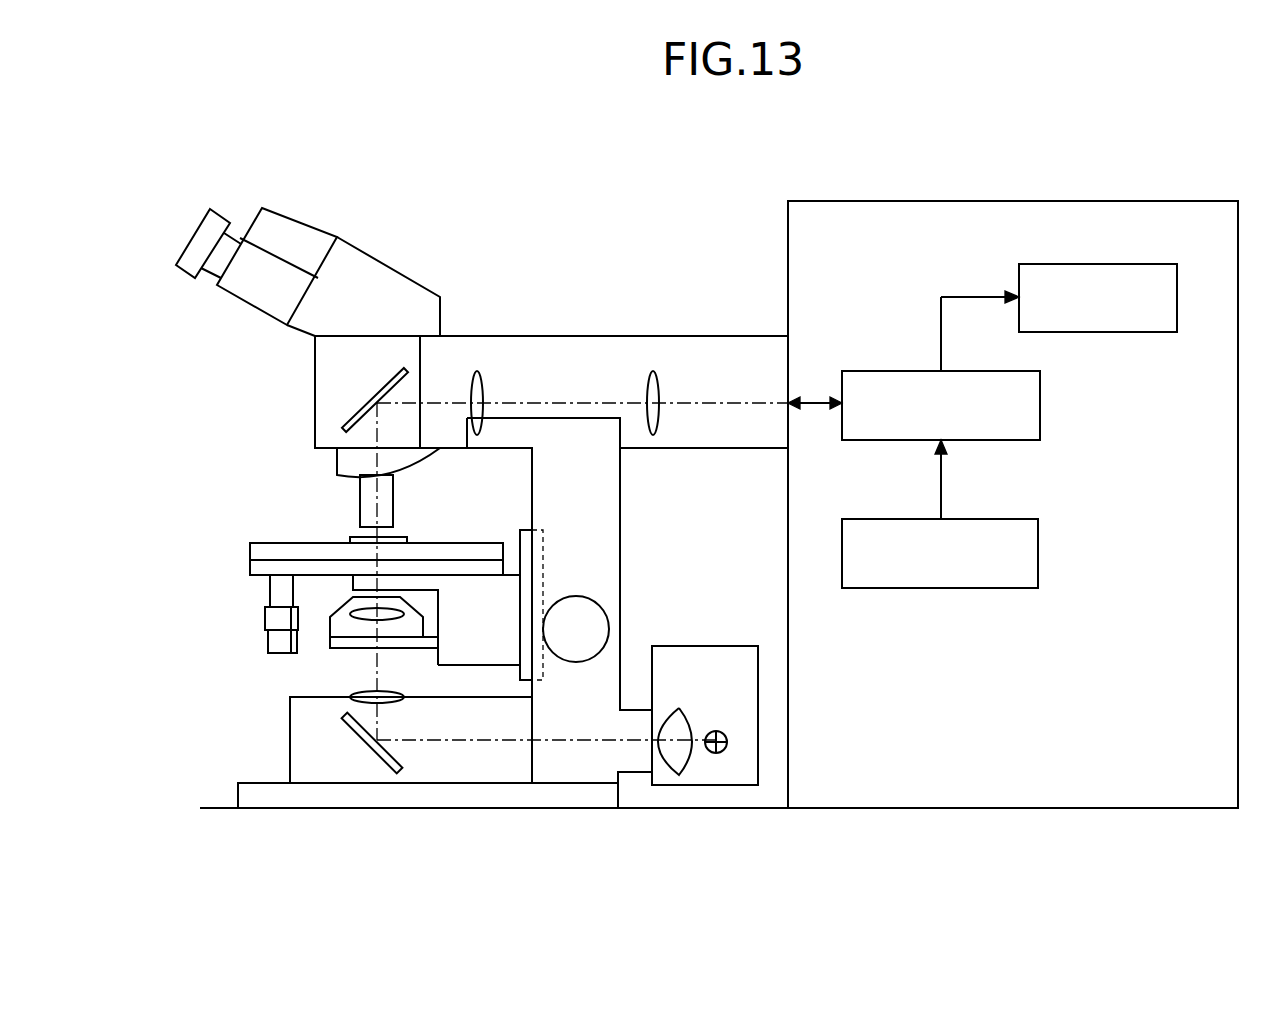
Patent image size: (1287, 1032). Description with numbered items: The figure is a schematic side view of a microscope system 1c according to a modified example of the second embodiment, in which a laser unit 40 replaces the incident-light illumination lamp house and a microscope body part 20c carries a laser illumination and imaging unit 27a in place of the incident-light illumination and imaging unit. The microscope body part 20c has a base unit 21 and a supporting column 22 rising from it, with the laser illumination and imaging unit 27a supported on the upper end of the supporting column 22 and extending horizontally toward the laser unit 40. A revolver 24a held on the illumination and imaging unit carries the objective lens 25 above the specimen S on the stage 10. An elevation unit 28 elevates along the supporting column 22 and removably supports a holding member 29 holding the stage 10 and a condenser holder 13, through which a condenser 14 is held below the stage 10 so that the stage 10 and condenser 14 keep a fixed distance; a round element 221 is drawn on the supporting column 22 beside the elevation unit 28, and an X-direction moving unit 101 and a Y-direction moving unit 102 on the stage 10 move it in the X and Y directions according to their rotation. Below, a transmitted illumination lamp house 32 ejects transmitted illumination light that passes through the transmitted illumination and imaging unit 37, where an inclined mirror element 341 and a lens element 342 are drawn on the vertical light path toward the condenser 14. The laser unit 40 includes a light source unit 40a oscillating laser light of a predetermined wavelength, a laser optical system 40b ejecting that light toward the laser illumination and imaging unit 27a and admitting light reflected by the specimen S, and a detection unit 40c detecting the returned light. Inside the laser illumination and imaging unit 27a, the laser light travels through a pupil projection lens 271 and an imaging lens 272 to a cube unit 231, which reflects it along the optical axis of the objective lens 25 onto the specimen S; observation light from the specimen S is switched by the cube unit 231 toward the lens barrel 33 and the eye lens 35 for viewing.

The microscope system 1c is at (475, 205).
The eye lens 35 is at (197, 245).
The lens barrel 33 is at (375, 282).
The cube unit 231 is at (327, 410).
The laser illumination and imaging unit 27a is at (593, 355).
The imaging lens 272 is at (477, 370).
The pupil projection lens 271 is at (655, 370).
The revolver 24a is at (348, 463).
The objective lens 25 is at (367, 502).
The specimen S is at (407, 538).
The stage 10 is at (257, 550).
The condenser 14 is at (360, 612).
The X-direction moving unit 101 is at (270, 618).
The Y-direction moving unit 102 is at (275, 642).
The condenser holder 13 is at (423, 643).
The holding member 29 is at (503, 640).
The lens 342 is at (360, 691).
The mirror 341 is at (373, 757).
The transmitted illumination and imaging unit 37 is at (457, 767).
The base unit 21 is at (545, 793).
The supporting column 22 is at (605, 525).
The elevation unit 28 is at (527, 577).
The focus knob 221 is at (598, 623).
The microscope body part 20c is at (648, 483).
The transmitted illumination lamp house 32 is at (702, 777).
The laser unit 40 is at (1145, 217).
The detection unit 40c is at (1124, 250).
The laser optical system 40b is at (972, 357).
The light source unit 40a is at (970, 505).